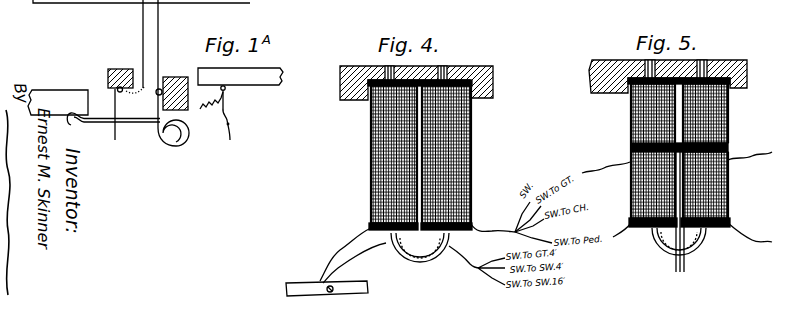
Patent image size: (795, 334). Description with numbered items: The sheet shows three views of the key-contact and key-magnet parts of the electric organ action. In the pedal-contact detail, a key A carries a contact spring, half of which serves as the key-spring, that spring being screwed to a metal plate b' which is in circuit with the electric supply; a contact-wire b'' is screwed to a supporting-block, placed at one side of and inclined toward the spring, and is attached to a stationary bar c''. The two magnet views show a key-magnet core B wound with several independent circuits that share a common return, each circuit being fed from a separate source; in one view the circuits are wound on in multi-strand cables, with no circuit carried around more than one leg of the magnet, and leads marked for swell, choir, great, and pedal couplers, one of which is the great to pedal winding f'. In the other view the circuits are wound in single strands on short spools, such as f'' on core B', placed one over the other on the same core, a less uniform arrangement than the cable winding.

In FIG. 1A, the key A is at (64, 90).
In FIG. 1A, the stationary bar c'' is at (204, 72).
In FIG. 1A, the metal plate b' is at (127, 97).
In FIG. 1A, the contact-wire b'' is at (185, 114).
In FIG. 4, the key-magnet core B is at (416, 258).
In FIG. 5, the magnet wire loop B' is at (671, 212).
In FIG. 5, the great to pedal winding f' is at (716, 113).
In FIG. 5, the winding section f'' is at (683, 151).